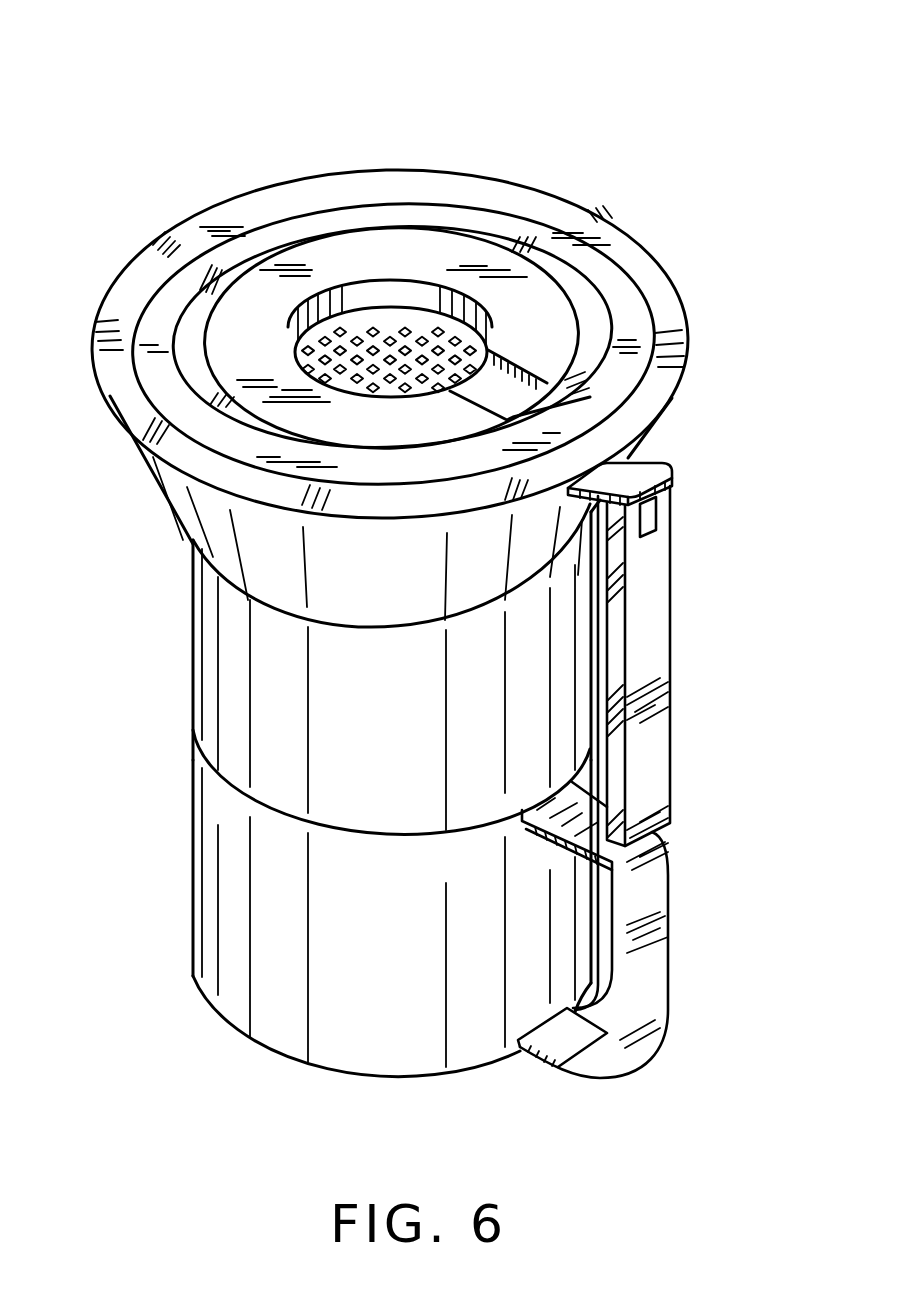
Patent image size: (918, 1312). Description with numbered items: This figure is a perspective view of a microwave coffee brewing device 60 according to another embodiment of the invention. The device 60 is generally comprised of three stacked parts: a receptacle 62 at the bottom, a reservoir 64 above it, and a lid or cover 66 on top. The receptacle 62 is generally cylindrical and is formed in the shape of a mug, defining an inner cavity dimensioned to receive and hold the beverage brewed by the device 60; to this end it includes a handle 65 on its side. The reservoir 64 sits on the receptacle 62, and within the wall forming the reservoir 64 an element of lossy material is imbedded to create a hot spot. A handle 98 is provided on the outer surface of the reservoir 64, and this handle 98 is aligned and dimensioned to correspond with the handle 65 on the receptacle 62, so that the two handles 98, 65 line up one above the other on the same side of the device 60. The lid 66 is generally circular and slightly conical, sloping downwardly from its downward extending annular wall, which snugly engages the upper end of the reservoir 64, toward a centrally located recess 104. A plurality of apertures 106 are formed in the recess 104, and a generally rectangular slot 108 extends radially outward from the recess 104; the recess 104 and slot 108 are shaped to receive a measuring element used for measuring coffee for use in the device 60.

The microwave coffee brewing device 60 is at (158, 76).
The lid 66 is at (160, 297).
The recess 104 is at (360, 322).
The apertures 106 is at (407, 328).
The slot 108 is at (500, 394).
The reservoir 64 is at (237, 683).
The receptacle 62 is at (270, 915).
The handle 98 is at (643, 643).
The handle 65 is at (643, 978).